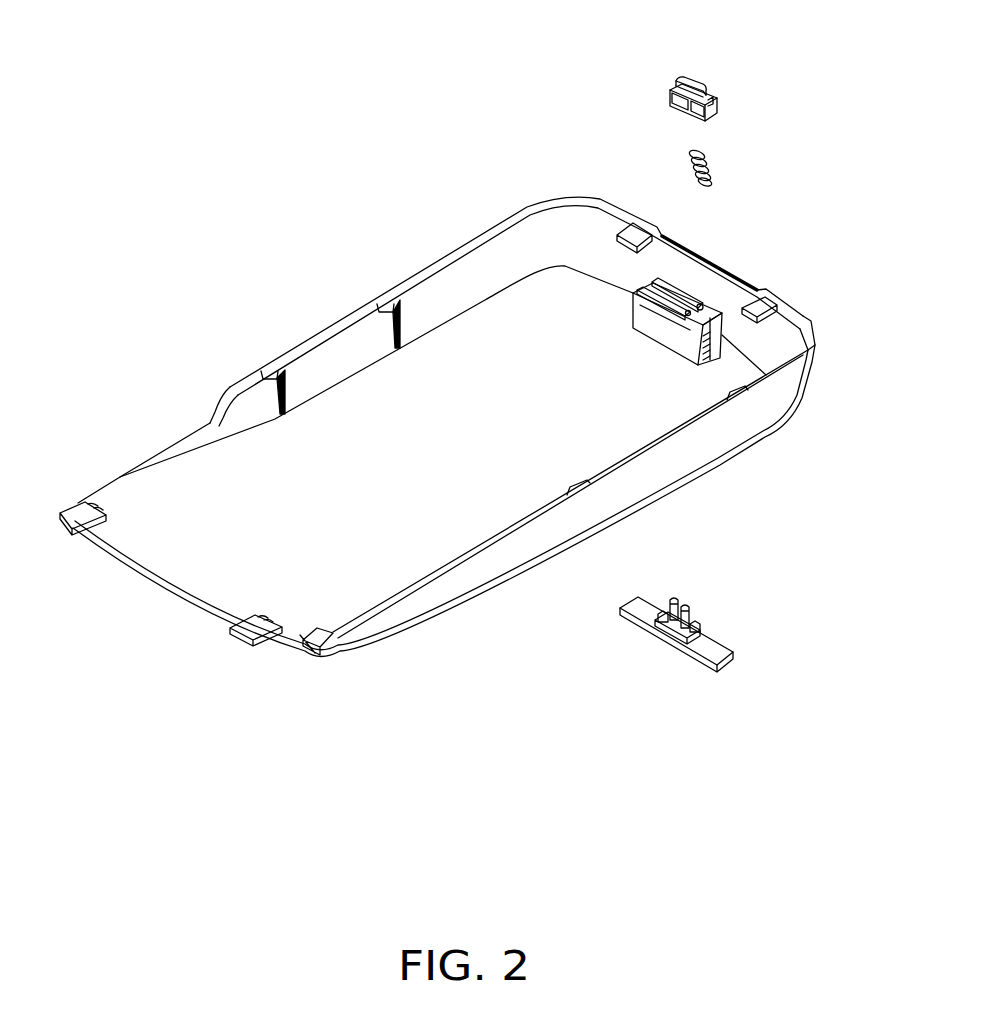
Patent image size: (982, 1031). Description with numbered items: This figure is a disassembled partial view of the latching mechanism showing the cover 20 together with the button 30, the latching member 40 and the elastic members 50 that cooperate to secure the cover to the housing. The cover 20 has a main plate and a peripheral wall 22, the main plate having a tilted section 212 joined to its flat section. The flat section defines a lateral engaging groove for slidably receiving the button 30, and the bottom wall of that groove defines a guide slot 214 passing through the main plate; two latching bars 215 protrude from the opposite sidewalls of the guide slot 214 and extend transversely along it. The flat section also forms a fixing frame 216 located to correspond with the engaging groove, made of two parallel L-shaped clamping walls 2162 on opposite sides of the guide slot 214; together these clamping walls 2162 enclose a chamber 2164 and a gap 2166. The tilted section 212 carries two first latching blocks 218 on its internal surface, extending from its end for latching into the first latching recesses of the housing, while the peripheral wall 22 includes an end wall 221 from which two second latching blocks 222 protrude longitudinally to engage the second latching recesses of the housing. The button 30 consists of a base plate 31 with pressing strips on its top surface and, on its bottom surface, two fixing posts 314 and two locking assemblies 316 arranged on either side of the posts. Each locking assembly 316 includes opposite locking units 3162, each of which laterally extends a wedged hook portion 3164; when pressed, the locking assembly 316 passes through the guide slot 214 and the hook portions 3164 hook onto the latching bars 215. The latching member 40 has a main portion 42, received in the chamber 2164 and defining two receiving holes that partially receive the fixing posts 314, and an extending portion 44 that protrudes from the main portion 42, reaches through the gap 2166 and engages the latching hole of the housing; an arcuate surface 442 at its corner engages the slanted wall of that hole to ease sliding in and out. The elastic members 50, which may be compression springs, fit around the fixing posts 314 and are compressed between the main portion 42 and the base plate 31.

The cover 20 is at (323, 265).
The tilted section 212 is at (473, 498).
The guide slot 214 is at (337, 600).
The first latching block 218 is at (236, 633).
The peripheral wall 22 is at (706, 448).
The end wall 221 is at (587, 237).
The second latching block 222 is at (634, 234).
The latching bar 215 is at (780, 313).
The fixing frame 216 is at (797, 222).
The clamping wall 2162 is at (653, 287).
The chamber 2164 is at (705, 358).
The gap 2166 is at (662, 320).
The button 30 is at (686, 672).
The base plate 31 is at (723, 660).
The fixing post 314 is at (671, 597).
The locking assembly 316 is at (790, 590).
The locking unit 3162 is at (693, 627).
The hook portion 3164 is at (656, 615).
The latching member 40 is at (695, 52).
The main portion 42 is at (712, 106).
The extending portion 44 is at (706, 78).
The arcuate surface 442 is at (678, 78).
The elastic member 50 is at (703, 163).